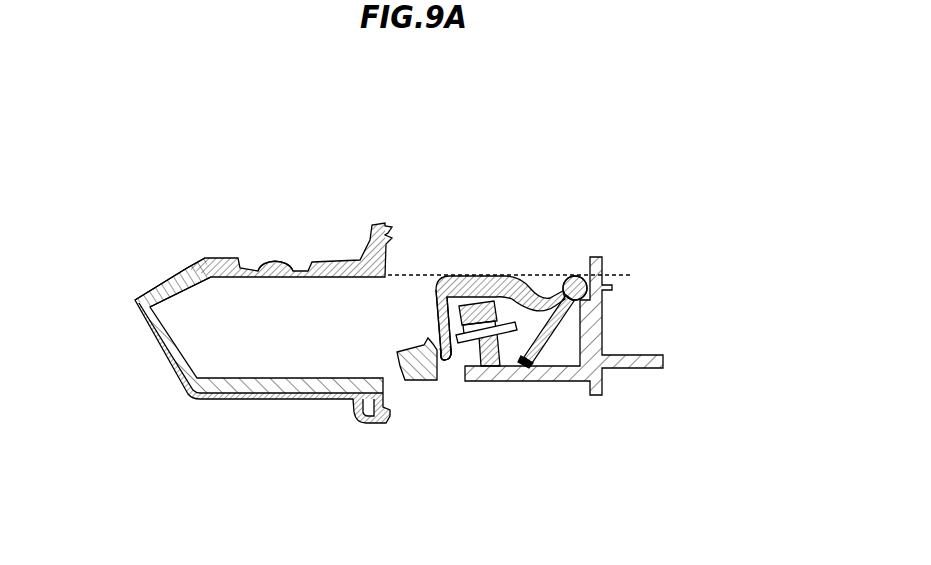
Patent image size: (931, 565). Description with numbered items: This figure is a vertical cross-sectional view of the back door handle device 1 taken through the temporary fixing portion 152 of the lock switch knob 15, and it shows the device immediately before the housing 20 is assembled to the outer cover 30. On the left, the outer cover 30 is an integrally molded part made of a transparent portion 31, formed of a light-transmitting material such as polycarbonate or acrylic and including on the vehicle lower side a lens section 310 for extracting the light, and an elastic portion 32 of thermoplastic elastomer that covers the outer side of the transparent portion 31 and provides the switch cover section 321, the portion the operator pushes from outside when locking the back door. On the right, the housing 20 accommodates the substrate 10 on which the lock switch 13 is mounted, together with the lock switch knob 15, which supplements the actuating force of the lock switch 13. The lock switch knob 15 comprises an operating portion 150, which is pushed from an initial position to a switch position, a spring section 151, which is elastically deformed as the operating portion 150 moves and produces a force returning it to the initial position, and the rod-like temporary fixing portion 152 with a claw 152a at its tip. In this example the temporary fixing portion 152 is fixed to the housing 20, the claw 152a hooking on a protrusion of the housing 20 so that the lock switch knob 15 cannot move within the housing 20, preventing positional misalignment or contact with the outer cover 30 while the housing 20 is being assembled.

The back door handle device 1 is at (486, 160).
The substrate 10 is at (398, 355).
The lock switch 13 is at (481, 303).
The lock switch knob 15 is at (552, 252).
The housing 20 is at (537, 383).
The outer cover 30 is at (293, 450).
The transparent portion 31 is at (287, 401).
The elastic portion 32 is at (248, 401).
The operating portion 150 is at (470, 284).
The spring section 151 is at (558, 322).
The temporary fixing portion 152 is at (436, 312).
The claw 152a is at (441, 364).
The lens section 310 is at (167, 272).
The switch cover section 321 is at (270, 260).